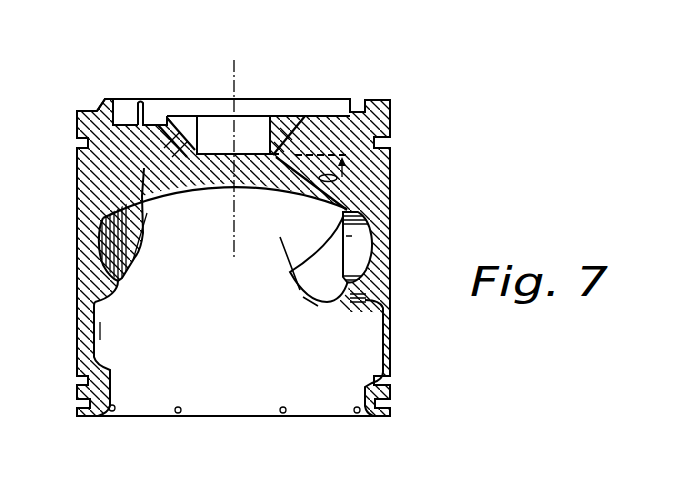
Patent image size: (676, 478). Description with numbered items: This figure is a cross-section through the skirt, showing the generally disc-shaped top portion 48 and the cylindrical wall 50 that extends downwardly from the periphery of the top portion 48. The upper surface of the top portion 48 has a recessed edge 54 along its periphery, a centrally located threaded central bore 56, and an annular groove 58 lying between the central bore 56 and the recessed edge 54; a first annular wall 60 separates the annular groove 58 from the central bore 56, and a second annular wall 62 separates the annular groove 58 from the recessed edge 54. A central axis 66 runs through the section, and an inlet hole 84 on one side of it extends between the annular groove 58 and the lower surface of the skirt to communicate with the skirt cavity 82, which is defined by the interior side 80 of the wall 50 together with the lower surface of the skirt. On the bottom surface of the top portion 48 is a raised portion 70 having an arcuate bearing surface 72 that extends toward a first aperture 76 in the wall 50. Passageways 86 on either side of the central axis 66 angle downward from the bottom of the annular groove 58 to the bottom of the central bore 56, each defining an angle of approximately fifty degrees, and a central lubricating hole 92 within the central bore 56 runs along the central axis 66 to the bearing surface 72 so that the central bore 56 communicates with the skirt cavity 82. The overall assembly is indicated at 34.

The piston 34 is at (68, 239).
The top portion 48 is at (389, 128).
The cylindrical wall 50 is at (391, 340).
The recessed edge 54 is at (378, 108).
The central bore 56 is at (198, 125).
The annular groove 58 is at (346, 120).
The first annular wall 60 is at (172, 117).
The second annular wall 62 is at (110, 99).
The central axis 66 is at (233, 255).
The raised portion 70 is at (192, 223).
The arcuate bearing surface 72 is at (292, 270).
The first aperture 76 is at (355, 250).
The interior side 80 is at (97, 351).
The skirt cavity 82 is at (272, 374).
The inlet hole 84 is at (133, 100).
The passageway 86 is at (332, 107).
The central lubricating hole 92 is at (256, 188).